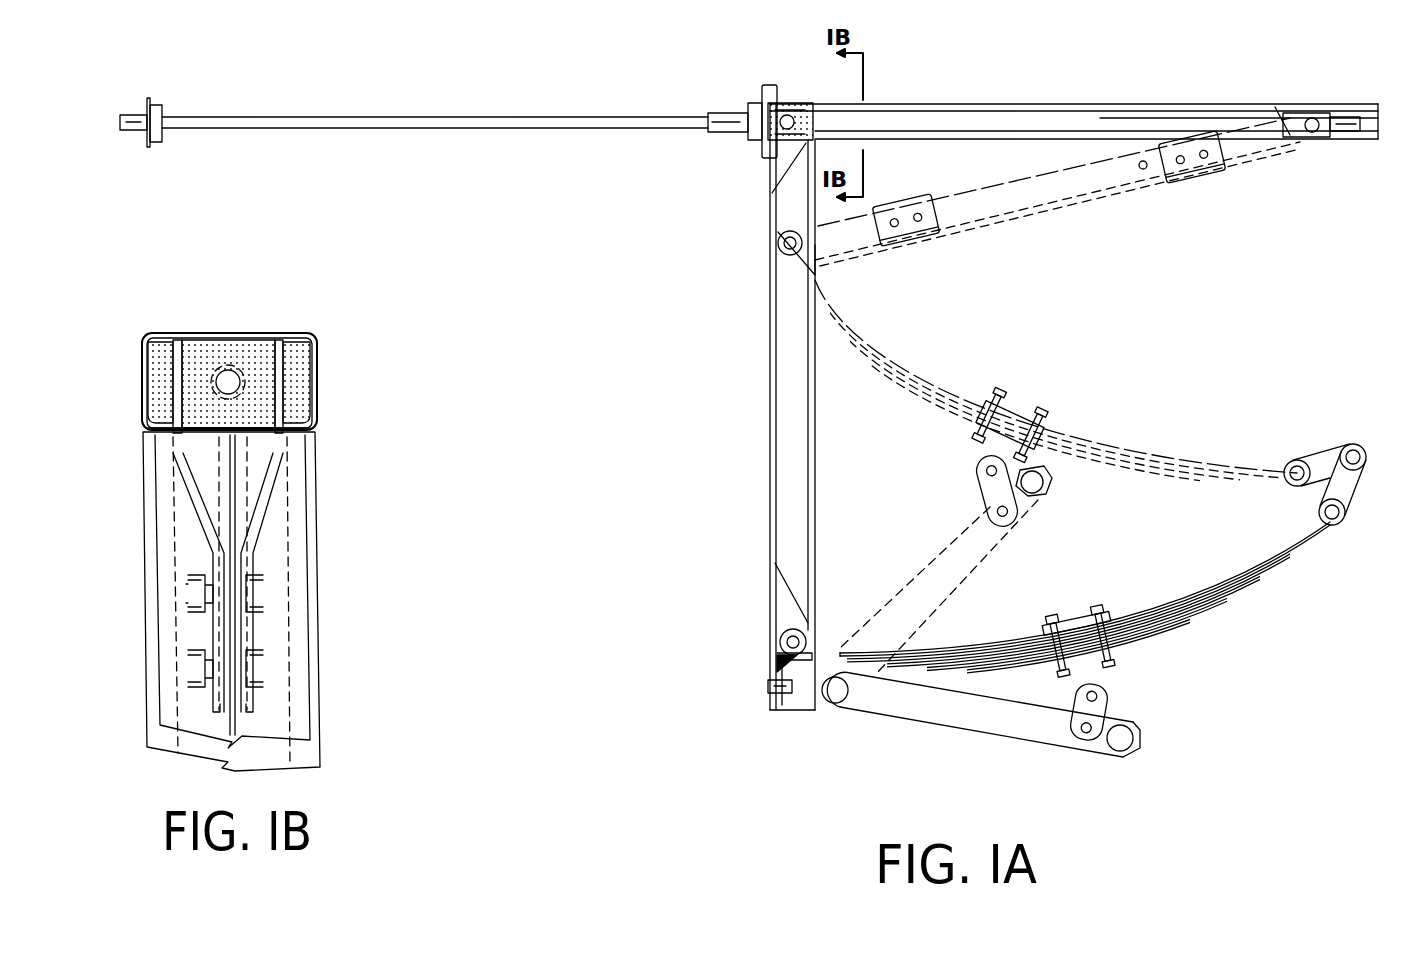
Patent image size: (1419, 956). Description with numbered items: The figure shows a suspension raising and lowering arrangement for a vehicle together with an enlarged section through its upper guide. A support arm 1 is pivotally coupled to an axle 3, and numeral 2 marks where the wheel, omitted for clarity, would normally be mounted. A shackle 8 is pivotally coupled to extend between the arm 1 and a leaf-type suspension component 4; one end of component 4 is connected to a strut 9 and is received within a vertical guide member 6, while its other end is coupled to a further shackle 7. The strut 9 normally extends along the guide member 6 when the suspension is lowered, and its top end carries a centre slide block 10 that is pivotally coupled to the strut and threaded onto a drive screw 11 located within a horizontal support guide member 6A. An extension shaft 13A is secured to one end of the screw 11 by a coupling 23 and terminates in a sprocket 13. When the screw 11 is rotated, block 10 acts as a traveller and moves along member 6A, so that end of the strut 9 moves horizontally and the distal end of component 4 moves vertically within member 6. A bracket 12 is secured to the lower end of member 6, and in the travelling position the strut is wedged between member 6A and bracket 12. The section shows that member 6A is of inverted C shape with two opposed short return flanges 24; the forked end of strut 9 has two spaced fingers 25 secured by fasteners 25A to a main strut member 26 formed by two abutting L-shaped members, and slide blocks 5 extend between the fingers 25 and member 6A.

In FIG. 1A, the support arm 1 is at (980, 735).
In FIG. 1A, the wheel mounting location 2 is at (1132, 757).
In FIG. 1A, the axle 3 is at (838, 705).
In FIG. 1A, the suspension component 4 is at (1238, 594).
In FIG. 1A, the slide blocks 5 is at (770, 648).
In FIG. 1B, the slide blocks 5 is at (297, 345).
In FIG. 1A, the guide member 6 is at (770, 455).
In FIG. 1B, the guide member 6 is at (318, 590).
In FIG. 1A, the support guide member 6A is at (1167, 102).
In FIG. 1B, the support guide member 6A is at (317, 362).
In FIG. 1A, the shackle 7 is at (1350, 486).
In FIG. 1A, the shackle 8 is at (1105, 685).
In FIG. 1A, the strut 9 is at (1053, 208).
In FIG. 1B, the strut 9 is at (270, 490).
In FIG. 1A, the centre slide block 10 is at (803, 100).
In FIG. 1B, the centre slide block 10 is at (202, 343).
In FIG. 1A, the drive screw 11 is at (970, 117).
In FIG. 1B, the drive screw 11 is at (235, 370).
In FIG. 1A, the bracket 12 is at (770, 662).
In FIG. 1A, the sprocket 13 is at (195, 130).
In FIG. 1A, the extension shaft 13A is at (318, 118).
In FIG. 1A, the coupling 23 is at (723, 110).
In FIG. 1B, the return flanges 24 is at (160, 425).
In FIG. 1B, the fingers 25 is at (175, 432).
In FIG. 1B, the fasteners 25A is at (265, 592).
In FIG. 1B, the main strut member 26 is at (148, 557).